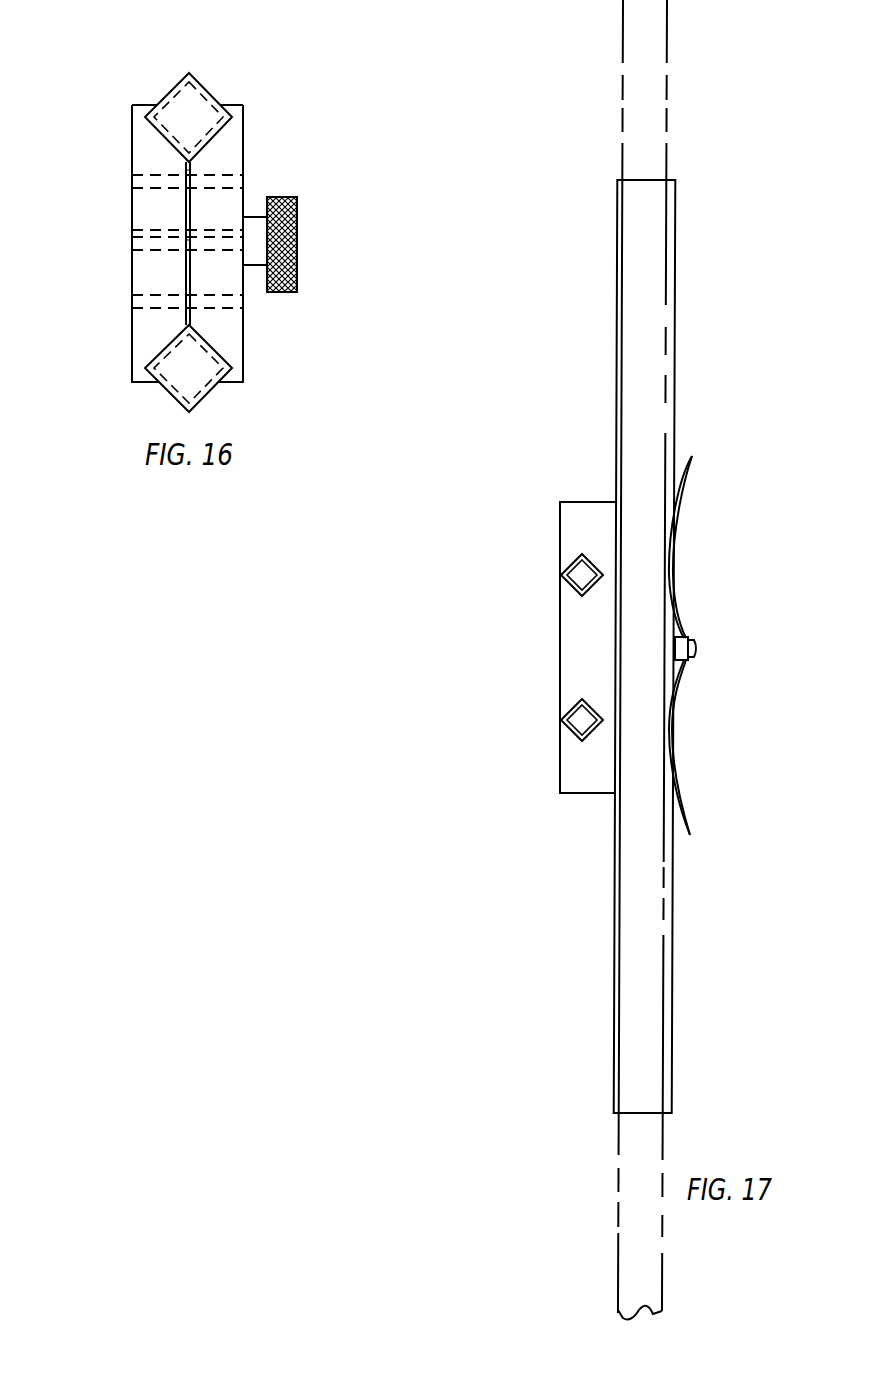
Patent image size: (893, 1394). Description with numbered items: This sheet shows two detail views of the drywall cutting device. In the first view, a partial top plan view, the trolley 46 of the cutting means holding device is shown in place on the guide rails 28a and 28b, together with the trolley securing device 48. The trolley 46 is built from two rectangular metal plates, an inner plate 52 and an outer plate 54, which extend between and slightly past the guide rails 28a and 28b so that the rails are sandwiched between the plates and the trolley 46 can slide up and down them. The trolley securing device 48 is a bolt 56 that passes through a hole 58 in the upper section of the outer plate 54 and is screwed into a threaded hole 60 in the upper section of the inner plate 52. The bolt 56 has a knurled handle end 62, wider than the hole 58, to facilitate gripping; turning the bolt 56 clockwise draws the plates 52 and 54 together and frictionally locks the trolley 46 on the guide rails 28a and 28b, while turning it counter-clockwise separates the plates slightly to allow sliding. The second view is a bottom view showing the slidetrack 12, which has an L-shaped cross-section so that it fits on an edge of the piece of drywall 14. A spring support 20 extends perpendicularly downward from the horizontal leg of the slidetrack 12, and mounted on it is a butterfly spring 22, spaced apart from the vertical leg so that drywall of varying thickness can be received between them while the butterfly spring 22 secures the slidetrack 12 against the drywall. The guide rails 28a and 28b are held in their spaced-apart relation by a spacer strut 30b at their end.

In FIG. 17, the slidetrack 12 is at (675, 1030).
In FIG. 17, the drywall 14 is at (616, 1262).
In FIG. 17, the spring support 20 is at (685, 635).
In FIG. 17, the butterfly spring 22 is at (671, 752).
In FIG. 17, the guide rail 28a is at (573, 712).
In FIG. 17, the guide rail 28b is at (573, 563).
In FIG. 17, the spacer strut 30b is at (588, 650).
In FIG. 16, the trolley 46 is at (258, 132).
In FIG. 16, the trolley securing device 48 is at (255, 212).
In FIG. 16, the inner plate 52 is at (147, 327).
In FIG. 16, the outer plate 54 is at (220, 330).
In FIG. 16, the bolt 56 is at (222, 243).
In FIG. 16, the hole 58 is at (213, 232).
In FIG. 16, the threaded hole 60 is at (150, 253).
In FIG. 16, the handle end 62 is at (297, 232).